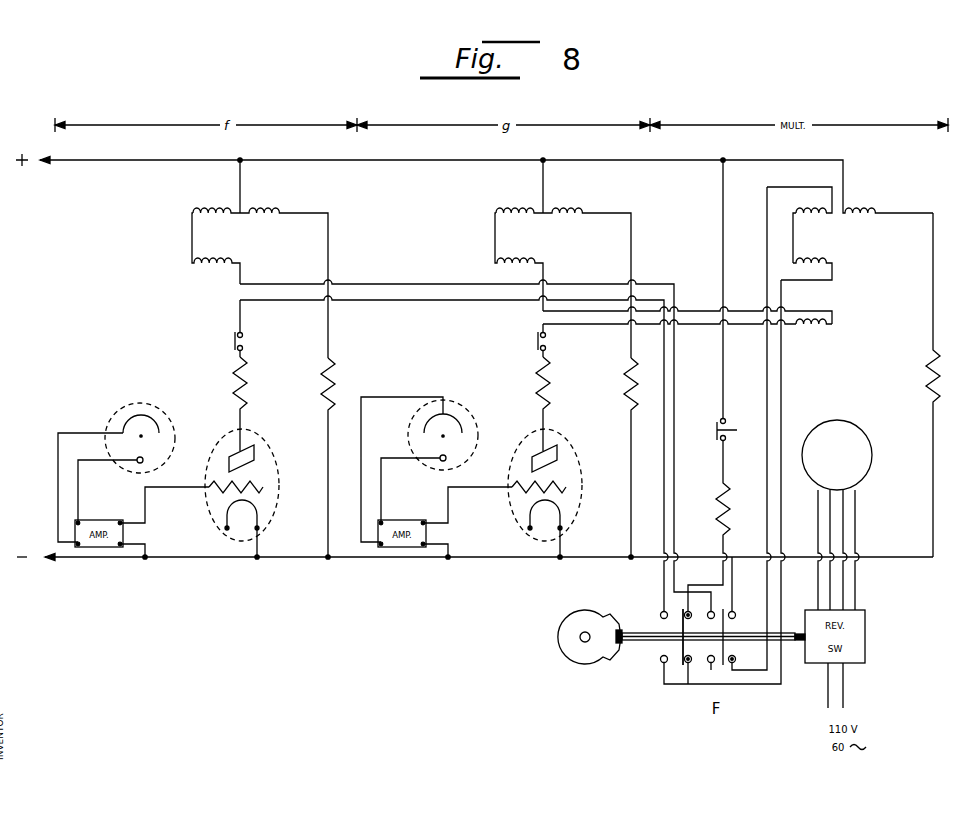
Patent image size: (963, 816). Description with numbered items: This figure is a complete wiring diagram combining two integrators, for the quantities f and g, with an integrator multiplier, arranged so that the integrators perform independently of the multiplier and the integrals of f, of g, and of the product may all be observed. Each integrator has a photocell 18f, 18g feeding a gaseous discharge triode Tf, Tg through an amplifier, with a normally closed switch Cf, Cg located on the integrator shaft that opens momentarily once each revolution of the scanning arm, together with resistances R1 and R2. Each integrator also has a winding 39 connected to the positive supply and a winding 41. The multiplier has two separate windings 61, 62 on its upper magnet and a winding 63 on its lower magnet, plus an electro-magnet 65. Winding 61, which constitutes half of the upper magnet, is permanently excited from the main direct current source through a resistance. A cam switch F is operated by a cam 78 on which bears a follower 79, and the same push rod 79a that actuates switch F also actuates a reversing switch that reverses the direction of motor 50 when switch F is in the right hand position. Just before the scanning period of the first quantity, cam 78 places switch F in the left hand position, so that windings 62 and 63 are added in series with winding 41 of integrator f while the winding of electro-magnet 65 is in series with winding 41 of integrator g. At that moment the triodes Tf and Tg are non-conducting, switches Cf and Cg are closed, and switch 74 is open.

The winding 39 is at (412, 259).
The winding of integrator 41 is at (367, 262).
The resistance R1 is at (404, 404).
The resistance R2 is at (491, 457).
The switch of integrator f Cf is at (248, 328).
The switch of integrator g Cg is at (552, 340).
The gas discharge triode of integrator f Tf is at (243, 493).
The gas discharge triode of integrator g Tg is at (547, 493).
The photocell 18f is at (116, 463).
The photocell 18g is at (419, 463).
The winding 61 is at (888, 195).
The winding 62 is at (799, 225).
The winding 63 is at (806, 276).
The electro-magnet 65 is at (814, 337).
The switch 74 is at (712, 385).
The motor 50 is at (837, 515).
The cam 78 is at (568, 623).
The follower 79 is at (620, 628).
The push rod 79a is at (628, 644).